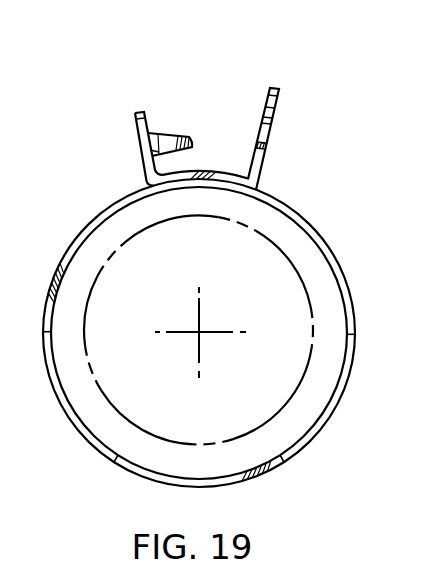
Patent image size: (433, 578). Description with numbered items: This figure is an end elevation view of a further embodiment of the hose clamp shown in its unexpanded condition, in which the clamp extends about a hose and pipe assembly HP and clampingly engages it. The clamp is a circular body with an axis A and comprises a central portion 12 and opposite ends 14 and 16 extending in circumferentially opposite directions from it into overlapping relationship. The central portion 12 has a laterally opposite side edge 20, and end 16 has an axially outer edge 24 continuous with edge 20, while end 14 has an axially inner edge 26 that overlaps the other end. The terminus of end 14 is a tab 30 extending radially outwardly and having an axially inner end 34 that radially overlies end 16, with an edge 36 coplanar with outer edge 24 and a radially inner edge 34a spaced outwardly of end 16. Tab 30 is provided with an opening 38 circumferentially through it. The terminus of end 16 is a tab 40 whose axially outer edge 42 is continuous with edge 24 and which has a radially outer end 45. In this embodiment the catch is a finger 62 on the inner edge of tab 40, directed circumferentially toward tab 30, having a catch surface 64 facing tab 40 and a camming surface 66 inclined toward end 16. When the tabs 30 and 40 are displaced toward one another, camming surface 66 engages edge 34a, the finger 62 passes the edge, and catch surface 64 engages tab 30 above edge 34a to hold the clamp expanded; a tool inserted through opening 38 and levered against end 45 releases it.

The central portion 12 is at (257, 482).
The end 14 is at (70, 234).
The end 16 is at (343, 250).
The side edge 20 is at (147, 472).
The axially outer edge 24 is at (347, 281).
The axially inner edge 26 is at (103, 210).
The tab 30 is at (277, 88).
The axially inner end 34 is at (271, 133).
The radially inner edge 34a is at (265, 152).
The edge 36 is at (258, 130).
The opening 38 is at (276, 107).
The tab 40 is at (134, 113).
The axially outer edge 42 is at (147, 153).
The radially outer end 45 is at (138, 112).
The finger 62 is at (177, 132).
The catch surface 64 is at (172, 134).
The camming surface 66 is at (185, 138).
The axis A is at (199, 332).
The hose and pipe assembly HP is at (312, 308).